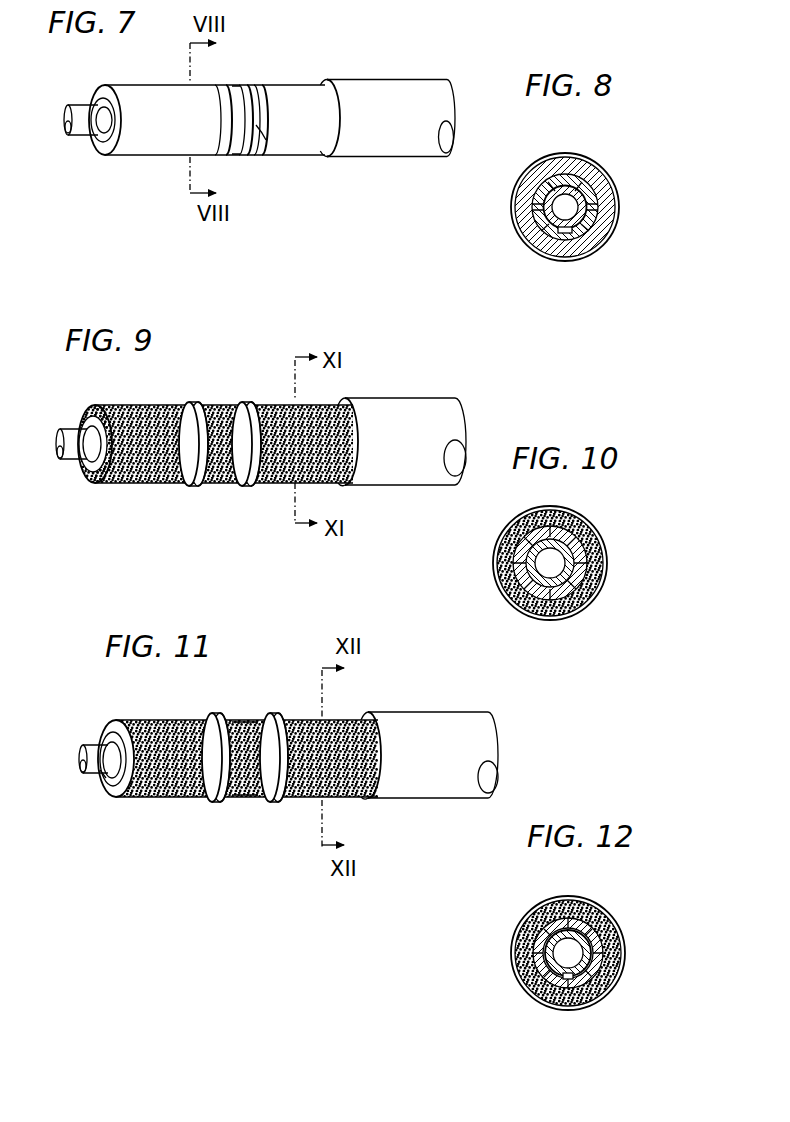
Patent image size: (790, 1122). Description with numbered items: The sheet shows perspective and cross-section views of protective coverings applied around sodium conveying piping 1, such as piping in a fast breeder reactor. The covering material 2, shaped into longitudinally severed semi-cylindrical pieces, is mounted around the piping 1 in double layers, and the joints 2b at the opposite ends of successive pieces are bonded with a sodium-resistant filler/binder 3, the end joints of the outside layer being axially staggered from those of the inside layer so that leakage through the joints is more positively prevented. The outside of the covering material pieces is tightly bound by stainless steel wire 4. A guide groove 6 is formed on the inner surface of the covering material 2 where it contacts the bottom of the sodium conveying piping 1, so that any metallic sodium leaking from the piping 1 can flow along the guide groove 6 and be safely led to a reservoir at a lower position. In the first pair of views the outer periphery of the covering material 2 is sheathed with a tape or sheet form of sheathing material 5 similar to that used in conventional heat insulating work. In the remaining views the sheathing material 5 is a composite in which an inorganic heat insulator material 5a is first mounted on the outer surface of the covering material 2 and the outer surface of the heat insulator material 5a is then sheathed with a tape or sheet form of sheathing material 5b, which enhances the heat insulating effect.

In FIG. 7, the sodium conveying piping 1 is at (83, 122).
In FIG. 8, the sodium conveying piping 1 is at (547, 243).
In FIG. 9, the sodium conveying piping 1 is at (70, 453).
In FIG. 10, the sodium conveying piping 1 is at (530, 612).
In FIG. 11, the sodium conveying piping 1 is at (80, 767).
In FIG. 12, the sodium conveying piping 1 is at (537, 997).
In FIG. 7, the covering material 2 is at (160, 147).
In FIG. 8, the covering material 2 is at (600, 187).
In FIG. 9, the covering material 2 is at (87, 477).
In FIG. 10, the covering material 2 is at (507, 587).
In FIG. 11, the covering material 2 is at (125, 800).
In FIG. 12, the covering material 2 is at (540, 970).
In FIG. 7, the joints at opposite ends of the covering material 2b is at (268, 154).
In FIG. 7, the filler/binder 3 is at (255, 154).
In FIG. 8, the filler/binder 3 is at (607, 246).
In FIG. 10, the filler/binder 3 is at (597, 540).
In FIG. 11, the filler/binder 3 is at (260, 798).
In FIG. 12, the filler/binder 3 is at (602, 943).
In FIG. 7, the stainless steel wire 4 is at (263, 83).
In FIG. 8, the stainless steel wire 4 is at (532, 214).
In FIG. 9, the stainless steel wire 4 is at (257, 472).
In FIG. 10, the stainless steel wire 4 is at (607, 583).
In FIG. 11, the stainless steel wire 4 is at (233, 800).
In FIG. 12, the stainless steel wire 4 is at (617, 967).
In FIG. 7, the sheathing material 5 is at (390, 142).
In FIG. 8, the sheathing material 5 is at (592, 260).
In FIG. 9, the sheathing material 5 is at (347, 491).
In FIG. 10, the sheathing material 5 is at (583, 617).
In FIG. 11, the sheathing material 5 is at (361, 709).
In FIG. 12, the sheathing material 5 is at (599, 1010).
In FIG. 9, the heat insulator material 5a is at (160, 467).
In FIG. 10, the heat insulator material 5a is at (550, 563).
In FIG. 11, the heat insulator material 5a is at (167, 783).
In FIG. 12, the heat insulator material 5a is at (517, 953).
In FIG. 9, the sheathing material 5b is at (413, 477).
In FIG. 11, the sheathing material 5b is at (428, 785).
In FIG. 12, the sheathing material 5b is at (617, 983).
In FIG. 7, the guide groove 6 is at (95, 138).
In FIG. 8, the guide groove 6 is at (567, 233).
In FIG. 11, the guide groove 6 is at (108, 788).
In FIG. 12, the guide groove 6 is at (563, 997).